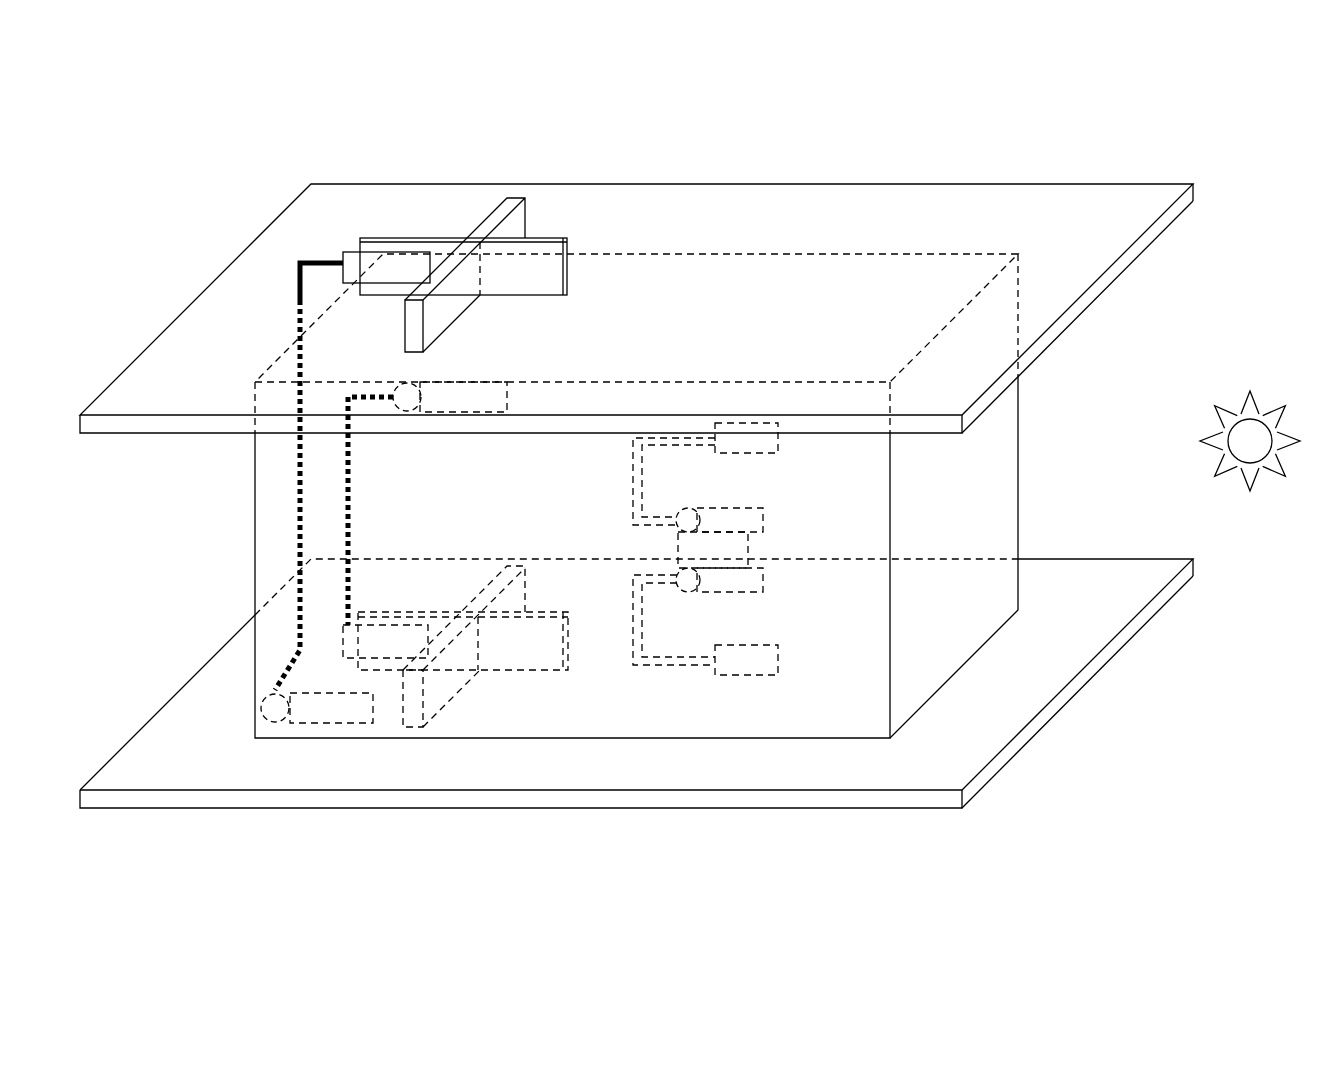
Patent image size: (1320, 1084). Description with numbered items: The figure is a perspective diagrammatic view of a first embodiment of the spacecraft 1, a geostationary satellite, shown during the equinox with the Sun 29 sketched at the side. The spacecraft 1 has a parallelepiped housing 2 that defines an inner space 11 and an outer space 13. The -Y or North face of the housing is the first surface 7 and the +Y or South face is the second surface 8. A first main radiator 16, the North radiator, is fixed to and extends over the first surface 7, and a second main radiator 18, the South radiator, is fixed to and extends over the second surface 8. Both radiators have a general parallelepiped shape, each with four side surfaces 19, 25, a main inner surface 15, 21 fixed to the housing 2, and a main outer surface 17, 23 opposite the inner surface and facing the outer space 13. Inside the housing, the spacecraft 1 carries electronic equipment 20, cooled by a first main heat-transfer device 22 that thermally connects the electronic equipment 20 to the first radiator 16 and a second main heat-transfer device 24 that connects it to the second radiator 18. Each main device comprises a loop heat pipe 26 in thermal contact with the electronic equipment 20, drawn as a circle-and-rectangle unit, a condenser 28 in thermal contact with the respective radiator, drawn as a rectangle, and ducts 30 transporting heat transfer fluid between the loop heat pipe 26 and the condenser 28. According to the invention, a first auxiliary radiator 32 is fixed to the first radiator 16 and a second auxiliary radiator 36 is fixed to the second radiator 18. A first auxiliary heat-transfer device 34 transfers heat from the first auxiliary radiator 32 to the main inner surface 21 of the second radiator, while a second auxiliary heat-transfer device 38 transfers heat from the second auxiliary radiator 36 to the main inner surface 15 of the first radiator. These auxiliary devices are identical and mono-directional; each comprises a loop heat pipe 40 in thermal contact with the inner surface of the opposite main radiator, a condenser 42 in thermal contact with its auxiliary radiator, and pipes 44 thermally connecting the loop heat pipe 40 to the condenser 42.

The spacecraft 1 is at (1077, 775).
The housing 2 is at (1020, 470).
The first surface 7 is at (805, 272).
The second surface 8 is at (773, 815).
The inner space 11 is at (474, 480).
The outer space 13 is at (988, 107).
The main inner surface 15 is at (1100, 300).
The first main radiator 16 is at (1137, 205).
The main outer surface 17 is at (712, 205).
The second main radiator 18 is at (1170, 605).
The side surfaces 19 is at (478, 182).
The electronic equipment 20 is at (750, 552).
The main inner surface 21 is at (222, 688).
The first main heat-transfer device 22 is at (630, 472).
The main outer surface 23 is at (363, 812).
The second main heat-transfer device 24 is at (630, 592).
The side surfaces 25 is at (980, 560).
The loop heat pipe 26 is at (725, 510).
The condenser 28 is at (780, 445).
The Sun 29 is at (1257, 415).
The ducts 30 is at (632, 507).
The first auxiliary radiator 32 is at (367, 240).
The first auxiliary heat-transfer device 34 is at (297, 477).
The second auxiliary radiator 36 is at (430, 703).
The second auxiliary heat-transfer device 38 is at (352, 528).
The loop heat pipe 40 is at (485, 388).
The condenser 42 is at (343, 255).
The pipes 44 is at (352, 483).